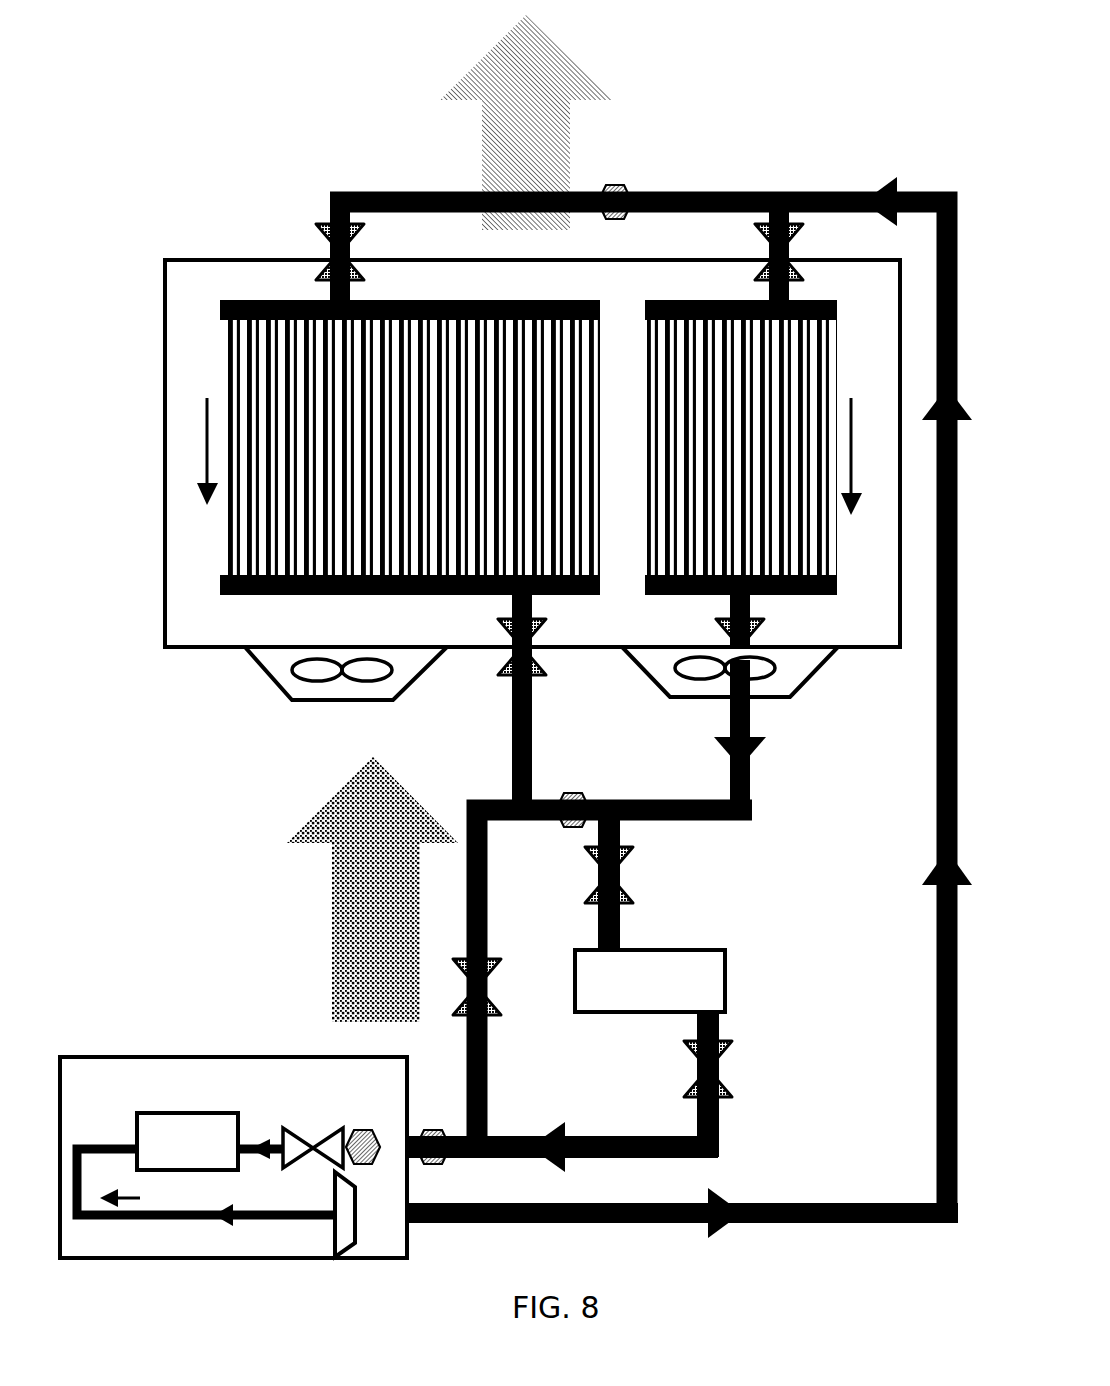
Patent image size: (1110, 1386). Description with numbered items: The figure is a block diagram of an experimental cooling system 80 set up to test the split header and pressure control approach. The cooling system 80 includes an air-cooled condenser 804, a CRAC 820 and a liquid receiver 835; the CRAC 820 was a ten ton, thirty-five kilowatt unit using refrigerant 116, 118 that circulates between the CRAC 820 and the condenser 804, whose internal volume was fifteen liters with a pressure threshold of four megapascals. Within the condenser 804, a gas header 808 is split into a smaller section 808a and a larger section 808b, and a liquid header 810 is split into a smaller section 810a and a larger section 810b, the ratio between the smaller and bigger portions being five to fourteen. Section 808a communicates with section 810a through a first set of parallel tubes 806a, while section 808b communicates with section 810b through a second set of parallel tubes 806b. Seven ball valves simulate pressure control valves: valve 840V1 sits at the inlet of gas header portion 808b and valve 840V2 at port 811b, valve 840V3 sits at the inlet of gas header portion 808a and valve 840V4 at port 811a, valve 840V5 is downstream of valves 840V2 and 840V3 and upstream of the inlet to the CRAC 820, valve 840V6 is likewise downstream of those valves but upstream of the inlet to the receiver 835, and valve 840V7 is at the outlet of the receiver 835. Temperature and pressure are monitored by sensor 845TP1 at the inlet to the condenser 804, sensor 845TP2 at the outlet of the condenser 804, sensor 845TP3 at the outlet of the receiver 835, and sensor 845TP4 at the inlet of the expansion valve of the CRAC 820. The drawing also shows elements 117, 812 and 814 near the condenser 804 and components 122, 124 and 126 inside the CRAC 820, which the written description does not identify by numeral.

The cooling system 80 is at (227, 103).
The refrigerant 116 is at (863, 193).
The fan 117 is at (290, 678).
The refrigerant 118 is at (727, 731).
The compressor 122 is at (332, 1225).
The expansion valve 124 is at (307, 1133).
The condenser 126 is at (180, 1128).
The air-cooled condenser 804 is at (223, 260).
The first set of parallel tubes 806a is at (797, 417).
The second set of parallel tubes 806b is at (245, 398).
The gas header 808 is at (225, 300).
The gas header section 808a is at (697, 300).
The gas header section 808b is at (303, 300).
The liquid header 810 is at (223, 575).
The liquid header section 810a is at (797, 598).
The liquid header section 810b is at (223, 597).
The port 811a is at (728, 598).
The port 811b is at (512, 597).
The inlet airflow 812 is at (340, 883).
The outlet airflow 814 is at (498, 95).
The CRAC 820 is at (182, 1057).
The liquid receiver 835 is at (683, 948).
The ball valve 840V1 is at (335, 225).
The ball valve 840V2 is at (508, 675).
The ball valve 840V3 is at (773, 195).
The ball valve 840V4 is at (760, 672).
The ball valve 840V5 is at (457, 1007).
The ball valve 840V6 is at (600, 867).
The ball valve 840V7 is at (700, 1057).
The temperature/pressure sensor 845TP1 is at (616, 197).
The temperature/pressure sensor 845TP2 is at (612, 765).
The temperature/pressure sensor 845TP3 is at (448, 1155).
The temperature/pressure sensor 845TP4 is at (355, 1133).